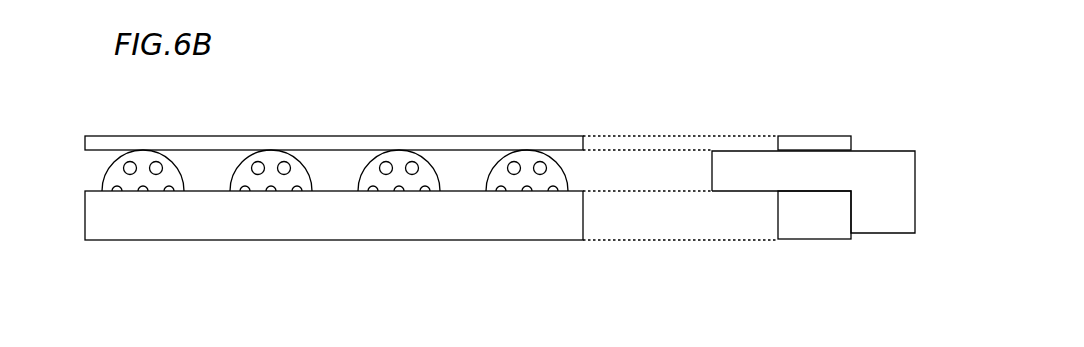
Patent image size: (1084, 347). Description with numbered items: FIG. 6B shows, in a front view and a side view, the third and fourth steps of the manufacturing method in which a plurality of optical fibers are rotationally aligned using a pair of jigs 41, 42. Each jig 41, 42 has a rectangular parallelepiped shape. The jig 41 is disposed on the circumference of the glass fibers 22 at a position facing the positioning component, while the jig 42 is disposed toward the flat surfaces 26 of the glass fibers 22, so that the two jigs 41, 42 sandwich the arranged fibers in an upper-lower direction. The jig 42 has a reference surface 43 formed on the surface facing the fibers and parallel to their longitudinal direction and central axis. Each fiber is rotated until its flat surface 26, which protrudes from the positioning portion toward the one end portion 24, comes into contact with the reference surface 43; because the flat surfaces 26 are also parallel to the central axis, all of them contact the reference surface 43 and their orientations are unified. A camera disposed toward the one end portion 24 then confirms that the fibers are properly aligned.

The glass fiber 22 is at (110, 165).
The one end portion 24 is at (116, 177).
The flat surface 26 is at (127, 192).
The jig 41 is at (414, 134).
The jig 42 is at (417, 241).
The reference surface 43 is at (578, 190).